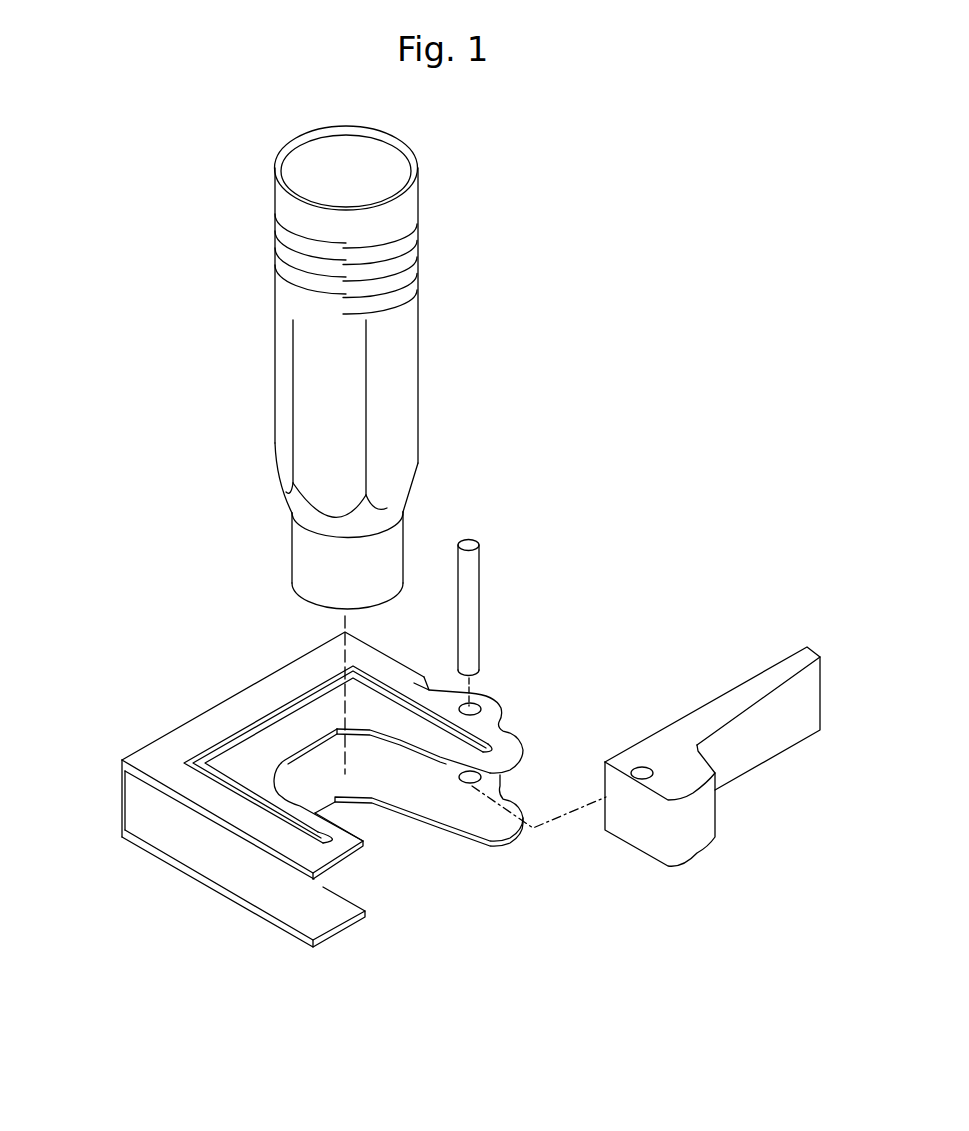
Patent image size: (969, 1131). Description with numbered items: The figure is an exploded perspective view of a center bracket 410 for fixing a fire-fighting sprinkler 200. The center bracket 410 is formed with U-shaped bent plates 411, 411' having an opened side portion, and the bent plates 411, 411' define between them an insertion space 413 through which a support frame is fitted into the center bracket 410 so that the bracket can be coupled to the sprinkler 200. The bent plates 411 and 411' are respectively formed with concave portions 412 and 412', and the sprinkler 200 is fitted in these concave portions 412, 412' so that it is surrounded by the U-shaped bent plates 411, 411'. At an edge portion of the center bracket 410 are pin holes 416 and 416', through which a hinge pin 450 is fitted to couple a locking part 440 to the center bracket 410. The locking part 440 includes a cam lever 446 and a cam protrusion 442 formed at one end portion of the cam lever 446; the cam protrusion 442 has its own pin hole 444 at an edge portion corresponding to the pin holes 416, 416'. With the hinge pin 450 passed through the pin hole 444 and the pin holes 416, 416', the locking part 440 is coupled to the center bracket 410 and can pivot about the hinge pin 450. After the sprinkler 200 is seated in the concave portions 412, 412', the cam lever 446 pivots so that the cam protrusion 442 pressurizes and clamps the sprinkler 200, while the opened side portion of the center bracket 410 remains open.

The sprinkler 200 is at (426, 366).
The hinge pin 450 is at (472, 577).
The center bracket 410 is at (157, 867).
The bent plate 411 is at (322, 799).
The bent plate 411' is at (364, 883).
The concave portion 412 is at (413, 801).
The concave portion 412' is at (361, 851).
The insertion space 413 is at (140, 807).
The pin hole 416 is at (523, 681).
The pin hole 416' is at (527, 743).
The locking part 440 is at (713, 687).
The cam protrusion 442 is at (688, 832).
The pin hole 444 is at (632, 770).
The cam lever 446 is at (763, 737).